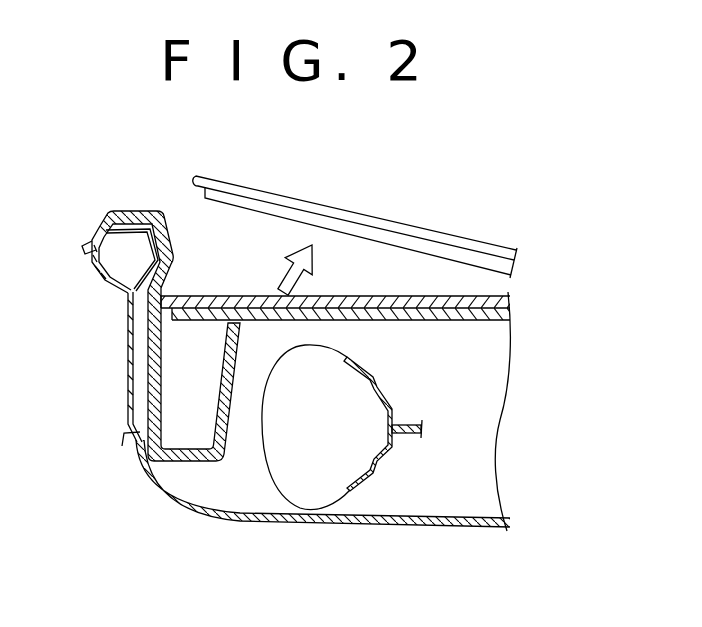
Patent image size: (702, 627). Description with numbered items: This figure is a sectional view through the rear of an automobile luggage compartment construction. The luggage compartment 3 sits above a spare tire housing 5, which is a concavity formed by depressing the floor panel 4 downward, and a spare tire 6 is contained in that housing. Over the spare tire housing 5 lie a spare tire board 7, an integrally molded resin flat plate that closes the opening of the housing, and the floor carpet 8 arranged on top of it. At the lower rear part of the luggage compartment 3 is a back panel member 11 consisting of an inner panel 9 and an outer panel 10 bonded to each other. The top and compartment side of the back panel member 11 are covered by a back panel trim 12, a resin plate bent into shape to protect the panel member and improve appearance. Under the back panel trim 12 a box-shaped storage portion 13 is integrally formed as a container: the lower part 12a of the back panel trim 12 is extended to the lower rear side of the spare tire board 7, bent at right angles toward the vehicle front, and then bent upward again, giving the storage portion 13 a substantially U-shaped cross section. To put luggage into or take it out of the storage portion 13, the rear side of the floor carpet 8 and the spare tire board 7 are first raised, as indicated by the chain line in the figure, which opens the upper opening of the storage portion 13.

The luggage compartment 3 is at (386, 187).
The floor panel 4 is at (240, 520).
The spare tire housing 5 is at (450, 393).
The spare tire 6 is at (352, 492).
The spare tire board 7 is at (246, 200).
The floor carpet 8 is at (262, 192).
The inner panel 9 is at (169, 245).
The outer panel 10 is at (128, 347).
The back panel member 11 is at (98, 283).
The back panel trim 12 is at (129, 212).
The lower part of the back panel trim 12a is at (152, 397).
The storage portion 13 is at (178, 425).